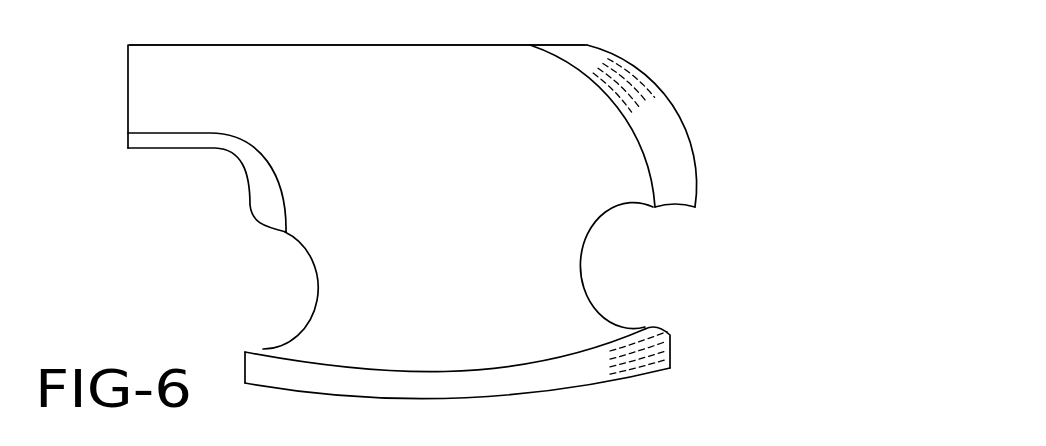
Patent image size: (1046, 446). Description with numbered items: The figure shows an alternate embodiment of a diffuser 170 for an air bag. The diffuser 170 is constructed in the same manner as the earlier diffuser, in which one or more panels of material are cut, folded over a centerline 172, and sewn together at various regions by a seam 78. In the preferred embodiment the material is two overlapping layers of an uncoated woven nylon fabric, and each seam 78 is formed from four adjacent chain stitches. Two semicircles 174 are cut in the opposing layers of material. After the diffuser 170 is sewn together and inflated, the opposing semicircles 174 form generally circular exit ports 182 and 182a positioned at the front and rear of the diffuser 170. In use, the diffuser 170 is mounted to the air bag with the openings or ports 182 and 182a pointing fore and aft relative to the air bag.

The diffuser 170 is at (140, 37).
The centerline 172 is at (237, 44).
The seam 78 is at (253, 172).
The semicircles 174 is at (276, 346).
The exit port 182 is at (674, 261).
The exit port 182a is at (266, 285).